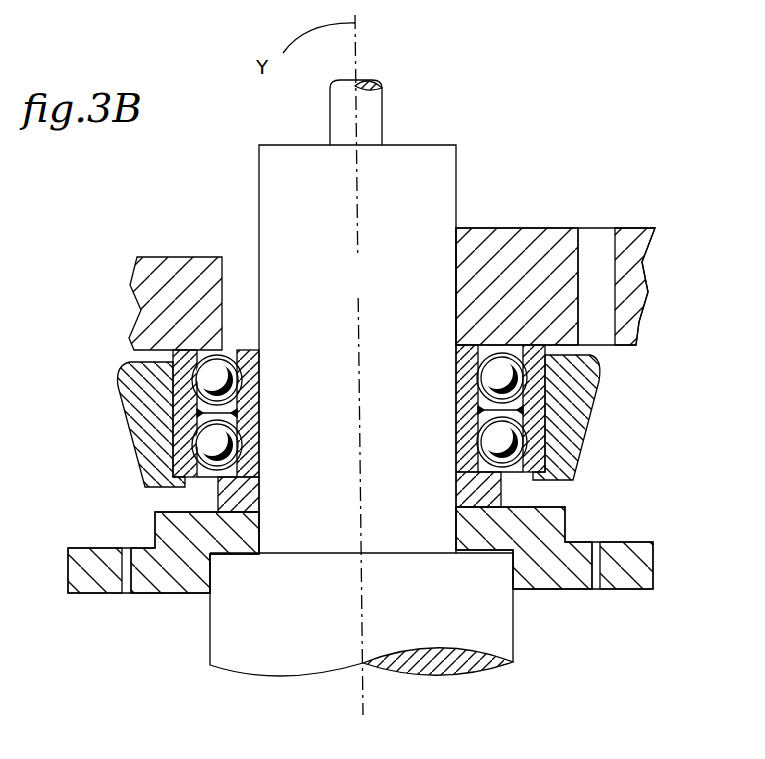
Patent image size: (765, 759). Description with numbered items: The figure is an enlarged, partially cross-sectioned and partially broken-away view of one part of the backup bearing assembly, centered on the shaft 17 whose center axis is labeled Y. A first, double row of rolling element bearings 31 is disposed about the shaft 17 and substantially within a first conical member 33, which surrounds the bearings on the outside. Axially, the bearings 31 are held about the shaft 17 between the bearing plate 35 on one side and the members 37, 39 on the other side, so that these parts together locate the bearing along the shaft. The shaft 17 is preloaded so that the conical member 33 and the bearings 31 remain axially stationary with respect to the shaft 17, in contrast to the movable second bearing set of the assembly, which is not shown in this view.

The shaft 17 is at (376, 293).
The first double row of rolling element bearings 31 is at (227, 355).
The first conical member 33 is at (573, 404).
The bearing plate 35 is at (484, 241).
The member 37 is at (500, 493).
The member 39 is at (543, 577).